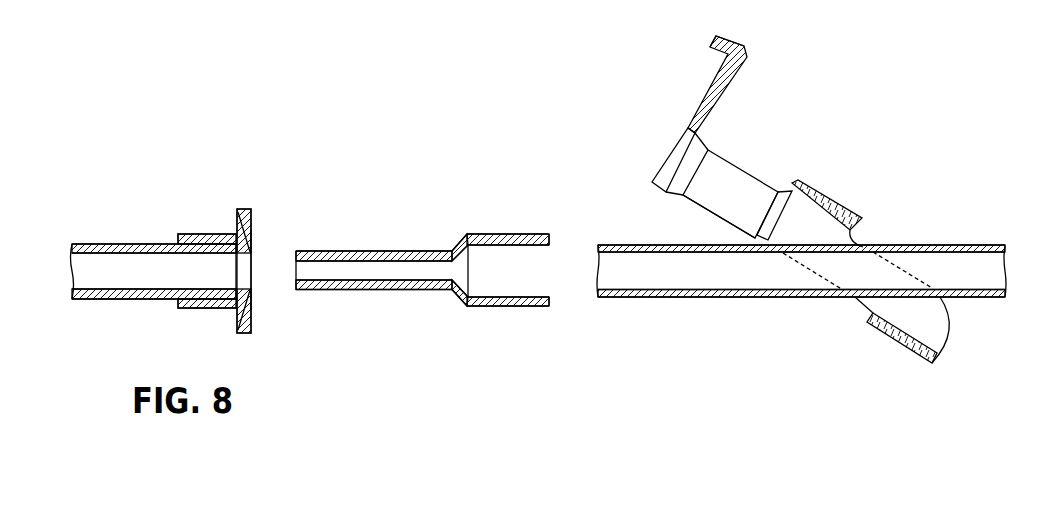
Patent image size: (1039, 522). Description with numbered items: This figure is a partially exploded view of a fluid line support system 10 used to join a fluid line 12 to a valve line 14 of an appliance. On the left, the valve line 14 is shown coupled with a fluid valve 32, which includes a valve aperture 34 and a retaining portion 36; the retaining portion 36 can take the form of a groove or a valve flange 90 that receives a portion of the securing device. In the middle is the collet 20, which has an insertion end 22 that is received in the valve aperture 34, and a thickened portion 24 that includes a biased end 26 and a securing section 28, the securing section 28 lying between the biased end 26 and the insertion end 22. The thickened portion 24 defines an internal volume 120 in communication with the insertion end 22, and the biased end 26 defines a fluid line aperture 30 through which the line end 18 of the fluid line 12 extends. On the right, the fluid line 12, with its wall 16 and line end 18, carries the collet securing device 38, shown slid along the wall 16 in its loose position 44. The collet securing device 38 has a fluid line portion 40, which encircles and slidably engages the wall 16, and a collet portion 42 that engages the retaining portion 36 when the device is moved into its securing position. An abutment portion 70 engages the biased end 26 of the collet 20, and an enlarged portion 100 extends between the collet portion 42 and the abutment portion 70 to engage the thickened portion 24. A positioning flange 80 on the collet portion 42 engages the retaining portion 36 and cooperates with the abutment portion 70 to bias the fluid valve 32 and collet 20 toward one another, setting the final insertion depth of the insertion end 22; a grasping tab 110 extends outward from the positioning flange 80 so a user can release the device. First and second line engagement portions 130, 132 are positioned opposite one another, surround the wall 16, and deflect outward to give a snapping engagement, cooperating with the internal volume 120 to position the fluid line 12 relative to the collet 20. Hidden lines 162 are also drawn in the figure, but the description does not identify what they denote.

The fluid line support system 10 is at (303, 163).
The fluid line 12 is at (965, 240).
The valve line 14 is at (123, 243).
The wall 16 is at (982, 297).
The line end 18 is at (596, 264).
The collet 20 is at (488, 224).
The insertion end 22 is at (293, 270).
The thickened portion 24 is at (507, 303).
The biased end 26 is at (548, 234).
The securing section 28 is at (453, 250).
The fluid line aperture 30 is at (552, 264).
The fluid valve 32 is at (208, 224).
The valve aperture 34 is at (252, 254).
The retaining portion 36 is at (228, 314).
The collet securing device 38 is at (756, 172).
The fluid line portion 40 is at (862, 337).
The collet portion 42 is at (660, 121).
The loose position 44 is at (828, 157).
The abutment portion 70 is at (786, 194).
The positioning flange 80 is at (713, 84).
The valve flange 90 is at (240, 218).
The enlarged portion 100 is at (720, 202).
The grasping tab 110 is at (722, 36).
The internal volume 120 is at (518, 278).
The first line engagement portion 130 is at (897, 350).
The second line engagement portion 132 is at (838, 195).
The hidden edge 162 is at (852, 308).